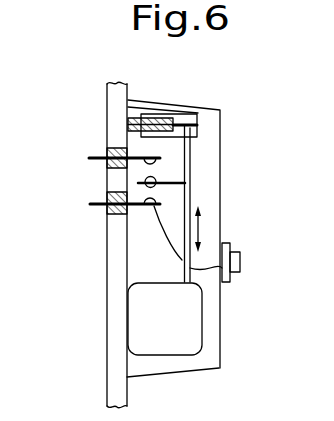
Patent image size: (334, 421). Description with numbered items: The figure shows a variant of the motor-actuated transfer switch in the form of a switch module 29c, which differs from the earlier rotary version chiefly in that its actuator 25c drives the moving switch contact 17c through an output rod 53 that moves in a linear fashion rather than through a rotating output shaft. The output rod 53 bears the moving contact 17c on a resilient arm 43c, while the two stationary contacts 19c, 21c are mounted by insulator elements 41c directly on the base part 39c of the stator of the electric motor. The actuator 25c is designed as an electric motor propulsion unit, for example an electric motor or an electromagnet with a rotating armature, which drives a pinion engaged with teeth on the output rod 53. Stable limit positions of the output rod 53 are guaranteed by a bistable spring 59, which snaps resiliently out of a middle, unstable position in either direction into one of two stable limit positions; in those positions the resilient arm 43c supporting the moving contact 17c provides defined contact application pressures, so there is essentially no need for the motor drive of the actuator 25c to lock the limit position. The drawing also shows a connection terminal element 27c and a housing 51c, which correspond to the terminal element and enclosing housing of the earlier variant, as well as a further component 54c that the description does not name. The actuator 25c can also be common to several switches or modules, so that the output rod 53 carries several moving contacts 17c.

The moving switch contact 17c is at (156, 178).
The stationary contact 19c is at (154, 157).
The stationary contact 21c is at (152, 204).
The actuator 25c is at (210, 313).
The knob 27c is at (242, 262).
The switch module 29c is at (223, 119).
The base part 39c is at (112, 365).
The insulator elements 41c is at (122, 186).
The resilient arm 43c is at (157, 183).
The bottom plate 51c is at (220, 362).
The output rod 53 is at (186, 228).
The link 54c is at (169, 241).
The bistable spring 59 is at (178, 125).